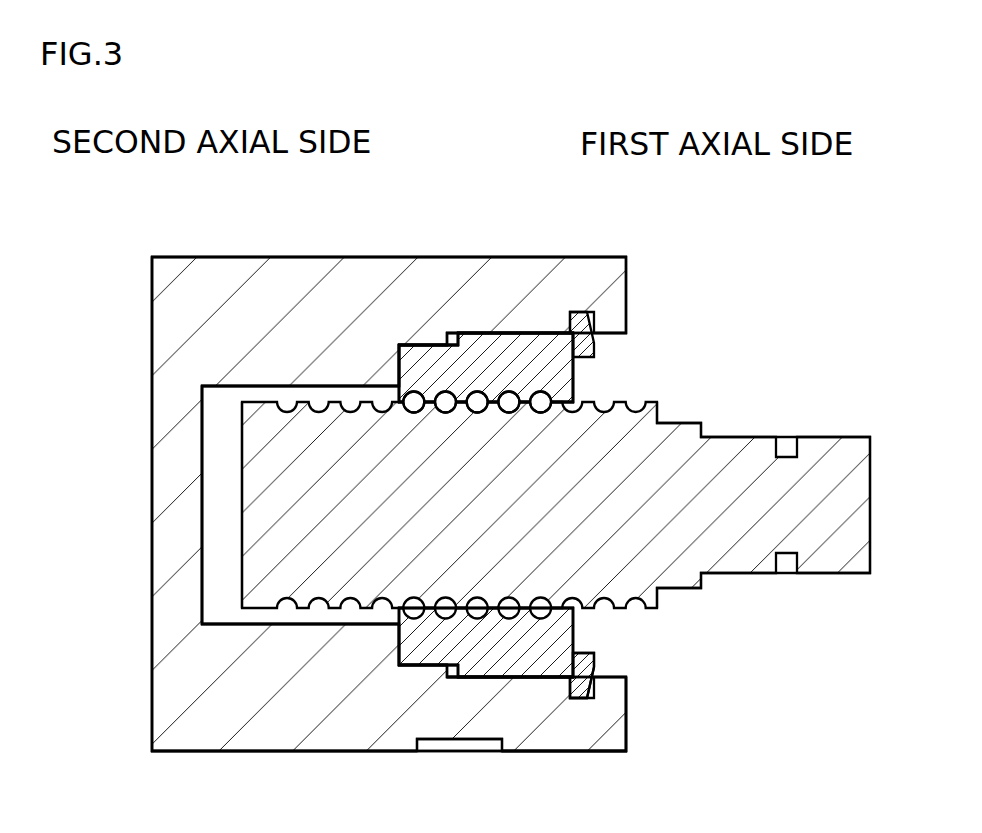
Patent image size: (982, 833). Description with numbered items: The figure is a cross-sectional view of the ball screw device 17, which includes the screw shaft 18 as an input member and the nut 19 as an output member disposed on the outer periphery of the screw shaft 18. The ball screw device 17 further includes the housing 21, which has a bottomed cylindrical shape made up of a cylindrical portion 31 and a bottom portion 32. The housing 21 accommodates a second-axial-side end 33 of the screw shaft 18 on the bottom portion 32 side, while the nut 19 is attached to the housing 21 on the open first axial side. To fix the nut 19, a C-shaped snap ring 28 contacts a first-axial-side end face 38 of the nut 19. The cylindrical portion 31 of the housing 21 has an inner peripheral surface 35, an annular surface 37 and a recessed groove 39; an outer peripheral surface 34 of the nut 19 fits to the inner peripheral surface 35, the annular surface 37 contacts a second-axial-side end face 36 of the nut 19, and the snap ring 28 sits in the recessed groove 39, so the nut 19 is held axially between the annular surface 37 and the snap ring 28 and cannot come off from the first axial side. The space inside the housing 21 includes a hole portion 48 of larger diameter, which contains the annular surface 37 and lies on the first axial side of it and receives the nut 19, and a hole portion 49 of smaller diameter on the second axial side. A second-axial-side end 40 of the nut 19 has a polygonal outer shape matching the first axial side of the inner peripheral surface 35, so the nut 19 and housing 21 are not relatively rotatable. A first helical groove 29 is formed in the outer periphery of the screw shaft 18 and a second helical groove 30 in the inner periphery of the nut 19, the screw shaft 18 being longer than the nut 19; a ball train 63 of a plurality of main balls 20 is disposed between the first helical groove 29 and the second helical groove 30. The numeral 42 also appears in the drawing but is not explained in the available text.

The ball screw device 17 is at (293, 257).
The screw shaft 18 is at (682, 450).
The nut 19 is at (473, 347).
The main ball 20 is at (414, 392).
The housing 21 is at (224, 257).
The snap ring 28 is at (594, 658).
The first helical groove 29 is at (546, 392).
The second helical groove 30 is at (523, 333).
The cylindrical portion 31 is at (364, 257).
The bottom portion 32 is at (165, 537).
The second-axial-side end 33 is at (257, 558).
The outer peripheral surface 34 is at (490, 700).
The inner peripheral surface 35 is at (525, 662).
The second-axial-side end face 36 is at (398, 635).
The annular surface 37 is at (403, 645).
The first-axial-side end face 38 is at (573, 622).
The recessed groove 39 is at (588, 692).
The second-axial-side end 40 is at (417, 635).
The rolling element 42 is at (556, 388).
The hole portion 48 is at (523, 340).
The hole portion 49 is at (288, 389).
The ball train 63 is at (443, 378).